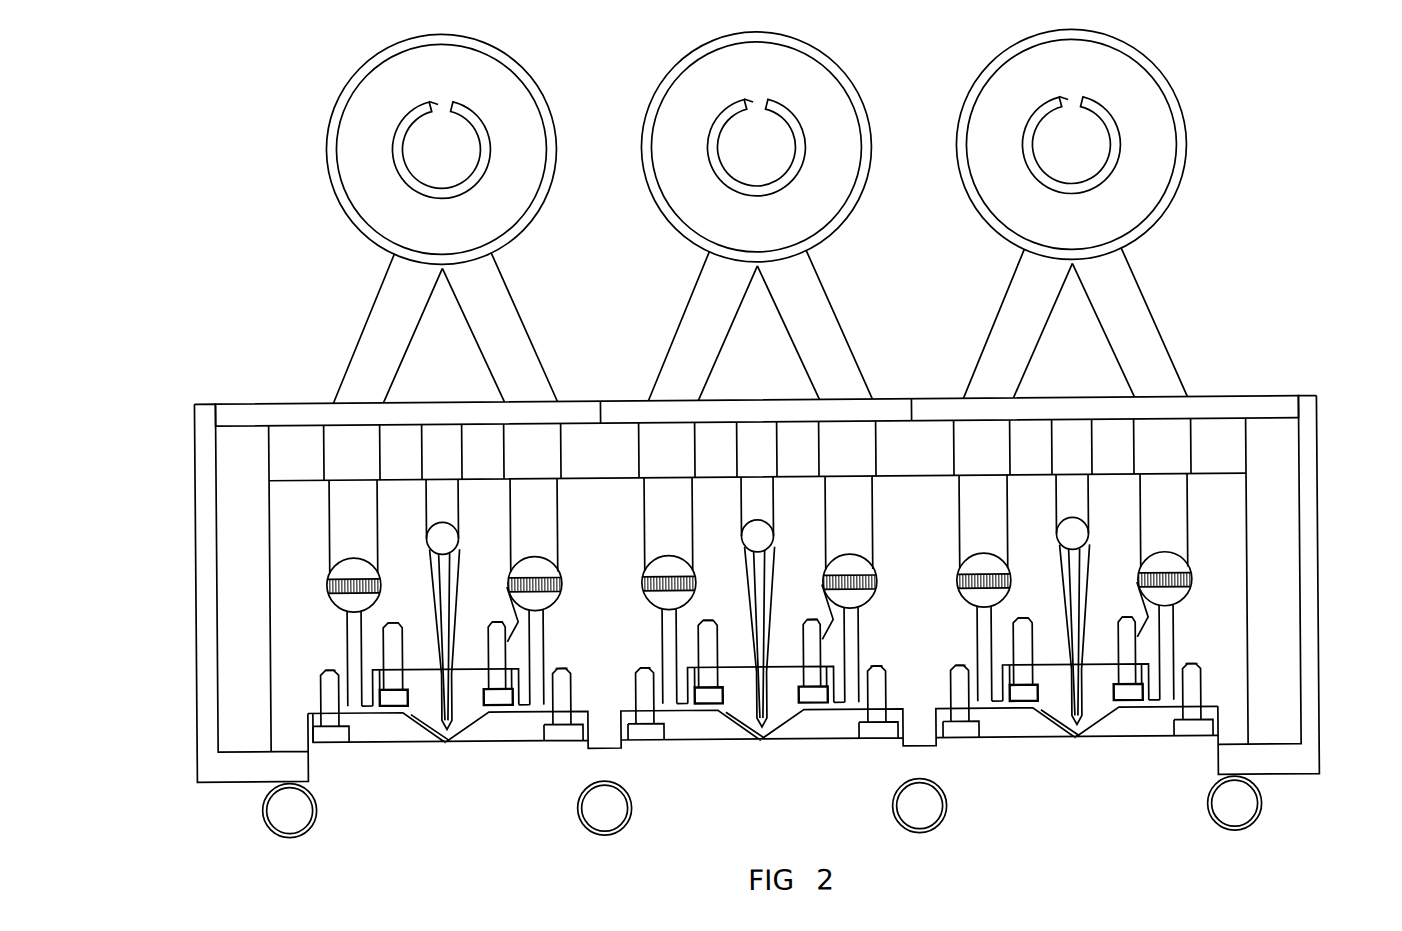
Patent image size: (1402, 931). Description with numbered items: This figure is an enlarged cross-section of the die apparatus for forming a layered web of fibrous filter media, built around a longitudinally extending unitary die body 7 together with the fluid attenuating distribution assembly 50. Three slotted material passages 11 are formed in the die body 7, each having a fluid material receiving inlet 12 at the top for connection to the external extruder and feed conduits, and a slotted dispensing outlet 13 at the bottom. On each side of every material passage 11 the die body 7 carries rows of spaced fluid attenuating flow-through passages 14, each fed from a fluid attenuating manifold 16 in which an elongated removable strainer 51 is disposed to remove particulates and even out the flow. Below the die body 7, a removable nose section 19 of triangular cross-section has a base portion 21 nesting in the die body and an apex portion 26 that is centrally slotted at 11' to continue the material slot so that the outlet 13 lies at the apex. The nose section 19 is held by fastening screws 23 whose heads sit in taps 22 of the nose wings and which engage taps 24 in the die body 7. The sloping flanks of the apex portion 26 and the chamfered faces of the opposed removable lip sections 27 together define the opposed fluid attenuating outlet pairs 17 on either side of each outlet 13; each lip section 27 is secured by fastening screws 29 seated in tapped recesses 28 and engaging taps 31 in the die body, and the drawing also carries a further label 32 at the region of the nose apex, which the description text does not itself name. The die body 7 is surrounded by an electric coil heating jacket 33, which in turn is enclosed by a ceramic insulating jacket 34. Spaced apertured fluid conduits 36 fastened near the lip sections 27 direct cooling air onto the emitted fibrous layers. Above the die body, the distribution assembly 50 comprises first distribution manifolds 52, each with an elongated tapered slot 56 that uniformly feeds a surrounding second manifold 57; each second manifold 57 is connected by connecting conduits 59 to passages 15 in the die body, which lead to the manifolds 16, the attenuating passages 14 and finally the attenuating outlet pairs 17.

The unitary die body 7 is at (1208, 516).
The slotted material passage 11 is at (775, 636).
The slot in apex portion 11' is at (798, 731).
The fluid material receiving inlet 12 is at (443, 533).
The fluid material slotted dispensing outlet 13 is at (448, 720).
The fluid attenuating flow-through passage 14 is at (352, 642).
The passage 15 is at (352, 500).
The fluid attenuating manifold 16 is at (345, 590).
The fluid attenuating outlet pair 17 is at (447, 740).
The nose section 19 is at (451, 668).
The base portion 21 is at (395, 665).
The spaced tap 22 is at (405, 687).
The fastening screw 23 is at (393, 635).
The spaced tap 24 is at (390, 618).
The apex portion 26 is at (427, 700).
The removable lip section 27 is at (380, 727).
The tapped recess 28 is at (313, 730).
The fastening screw 29 is at (327, 688).
The spaced tap 31 is at (332, 668).
The groove tip 32 is at (447, 739).
The electric coil heating jacket 33 is at (225, 563).
The ceramic insulating jacket 34 is at (208, 632).
The apertured fluid conduit 36 is at (312, 815).
The fluid attenuating distribution assembly 50 is at (1190, 100).
The fluid filter or strainer 51 is at (1167, 610).
The first distribution manifold 52 is at (484, 167).
The tapered slot 56 is at (442, 102).
The second manifold 57 is at (533, 85).
The connecting conduit 59 is at (382, 348).